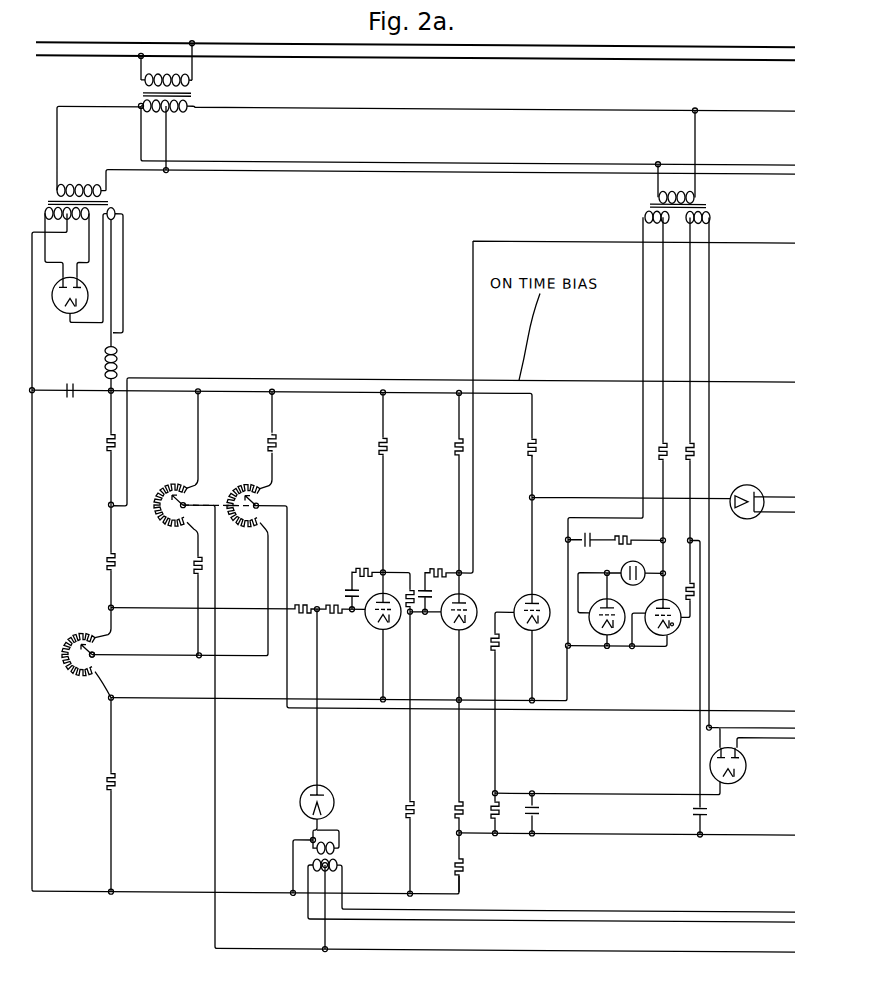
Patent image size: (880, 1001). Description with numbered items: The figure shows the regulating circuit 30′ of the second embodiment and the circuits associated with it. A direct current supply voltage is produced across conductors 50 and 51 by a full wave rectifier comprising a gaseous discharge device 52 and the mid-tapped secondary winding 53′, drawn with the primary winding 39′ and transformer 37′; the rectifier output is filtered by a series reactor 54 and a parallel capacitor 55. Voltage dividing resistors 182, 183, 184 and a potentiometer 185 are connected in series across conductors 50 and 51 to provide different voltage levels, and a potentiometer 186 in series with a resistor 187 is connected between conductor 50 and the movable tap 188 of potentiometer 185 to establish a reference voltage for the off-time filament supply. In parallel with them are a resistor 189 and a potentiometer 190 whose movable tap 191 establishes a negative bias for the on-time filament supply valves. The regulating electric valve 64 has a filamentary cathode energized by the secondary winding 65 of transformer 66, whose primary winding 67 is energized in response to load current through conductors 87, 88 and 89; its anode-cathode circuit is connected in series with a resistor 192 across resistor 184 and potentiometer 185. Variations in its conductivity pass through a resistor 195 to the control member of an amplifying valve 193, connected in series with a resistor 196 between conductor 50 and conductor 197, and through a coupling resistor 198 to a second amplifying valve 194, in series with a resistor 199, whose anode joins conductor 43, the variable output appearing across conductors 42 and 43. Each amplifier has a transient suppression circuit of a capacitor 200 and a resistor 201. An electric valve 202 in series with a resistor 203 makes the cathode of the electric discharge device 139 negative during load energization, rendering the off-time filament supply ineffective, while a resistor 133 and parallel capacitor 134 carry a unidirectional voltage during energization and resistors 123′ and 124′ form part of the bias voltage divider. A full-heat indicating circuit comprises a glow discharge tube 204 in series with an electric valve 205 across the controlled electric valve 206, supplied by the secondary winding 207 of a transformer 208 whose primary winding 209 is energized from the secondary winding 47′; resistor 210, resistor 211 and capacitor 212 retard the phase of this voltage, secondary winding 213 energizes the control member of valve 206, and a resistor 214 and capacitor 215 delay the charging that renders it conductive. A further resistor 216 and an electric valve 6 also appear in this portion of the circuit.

The primary winding 39′ is at (166, 78).
The transformer 37′ is at (144, 93).
The secondary winding 47′ is at (193, 109).
The mid-tapped secondary winding 53′ is at (56, 202).
The gaseous discharge device 52 is at (61, 307).
The series reactor 54 is at (118, 355).
The parallel capacitor 55 is at (71, 394).
The conductor 50 is at (143, 392).
The regulating circuit 30′ is at (310, 364).
The conductor 42 is at (572, 376).
The conductor 43 is at (471, 311).
The voltage dividing resistor 182 is at (107, 448).
The voltage dividing resistor 183 is at (107, 558).
The voltage dividing resistor 184 is at (109, 782).
The potentiometer 185 is at (80, 677).
The potentiometer 186 is at (170, 484).
The resistor 187 is at (197, 563).
The movable tap 188 is at (94, 643).
The resistor 189 is at (276, 448).
The potentiometer 190 is at (242, 485).
The movable tap 191 is at (259, 502).
The resistor 192 is at (303, 597).
The amplifying valve 193 is at (366, 619).
The second amplifying valve 194 is at (475, 598).
The resistor 195 is at (334, 604).
The resistor 196 is at (387, 442).
The conductor 197 is at (225, 700).
The resistor 198 is at (408, 580).
The resistor 199 is at (452, 448).
The capacitor 200 is at (350, 585).
The resistor 201 is at (363, 567).
The electric valve 202 is at (535, 598).
The resistor 203 is at (535, 440).
The glow discharge tube 204 is at (624, 563).
The electric valve 205 is at (596, 636).
The controlled electric valve 206 is at (673, 633).
The secondary winding 207 is at (648, 213).
The transformer 208 is at (708, 202).
The primary winding 209 is at (695, 195).
The resistor 210 is at (669, 440).
The resistor 211 is at (625, 536).
The capacitor 212 is at (596, 514).
The secondary winding 213 is at (708, 215).
The resistor 214 is at (702, 440).
The capacitor 215 is at (710, 803).
The resistor 216 is at (701, 590).
The electric discharge device 139 is at (745, 481).
The rectifier tube 6 is at (746, 762).
The regulating electric valve 64 is at (329, 789).
The secondary winding 65 is at (339, 838).
The transformer 66 is at (368, 857).
The primary winding 67 is at (339, 865).
The resistor 123′ is at (457, 802).
The voltage dividing resistor 124′ is at (465, 868).
The resistor 133 is at (500, 789).
The parallel capacitor 134 is at (538, 808).
The conductor 87 is at (550, 906).
The conductor 88 is at (566, 948).
The conductor 89 is at (548, 919).
The conductor 51 is at (160, 892).